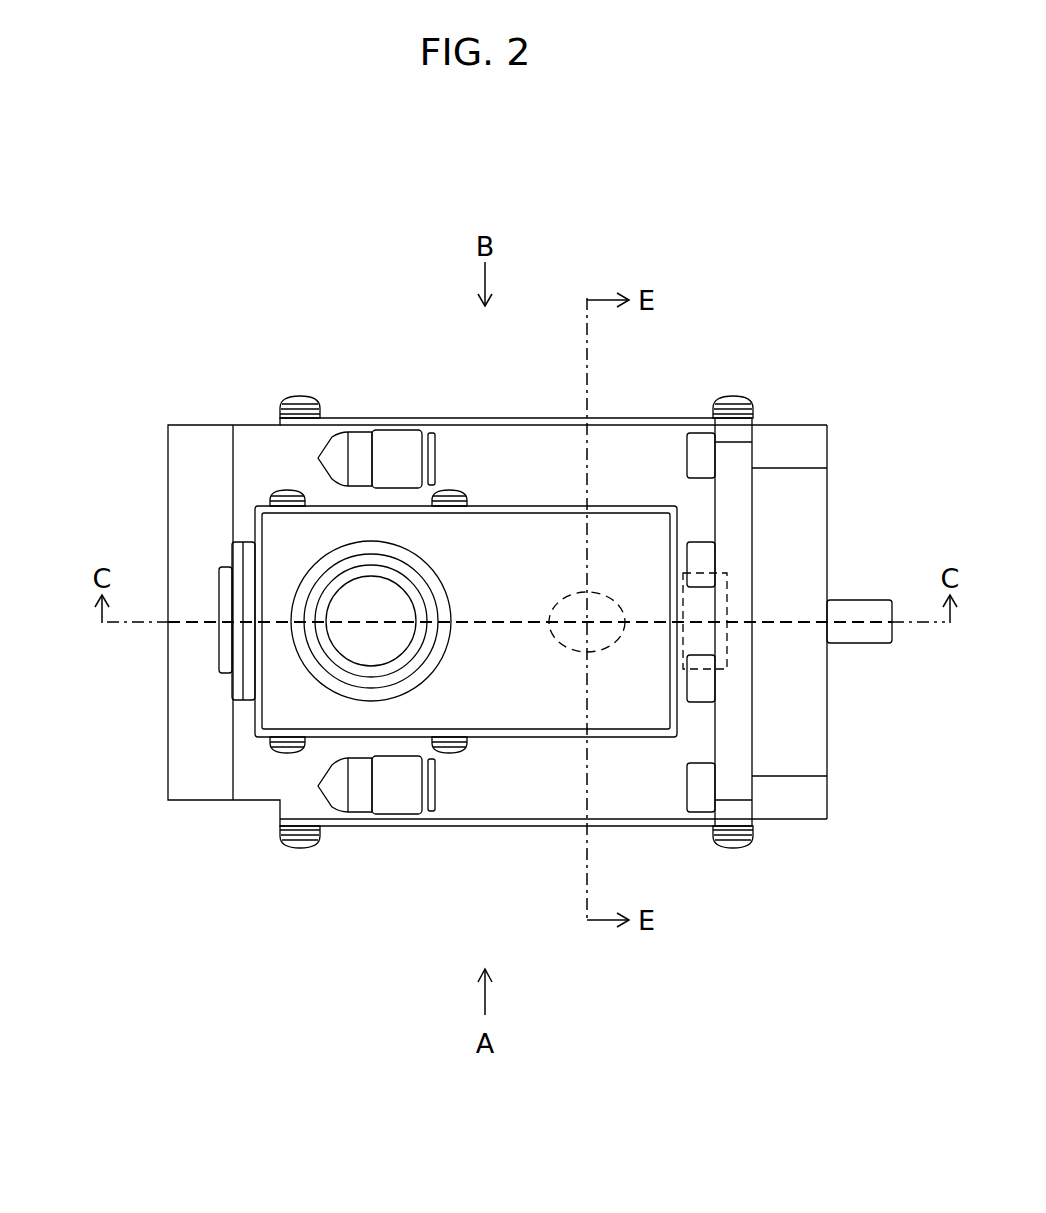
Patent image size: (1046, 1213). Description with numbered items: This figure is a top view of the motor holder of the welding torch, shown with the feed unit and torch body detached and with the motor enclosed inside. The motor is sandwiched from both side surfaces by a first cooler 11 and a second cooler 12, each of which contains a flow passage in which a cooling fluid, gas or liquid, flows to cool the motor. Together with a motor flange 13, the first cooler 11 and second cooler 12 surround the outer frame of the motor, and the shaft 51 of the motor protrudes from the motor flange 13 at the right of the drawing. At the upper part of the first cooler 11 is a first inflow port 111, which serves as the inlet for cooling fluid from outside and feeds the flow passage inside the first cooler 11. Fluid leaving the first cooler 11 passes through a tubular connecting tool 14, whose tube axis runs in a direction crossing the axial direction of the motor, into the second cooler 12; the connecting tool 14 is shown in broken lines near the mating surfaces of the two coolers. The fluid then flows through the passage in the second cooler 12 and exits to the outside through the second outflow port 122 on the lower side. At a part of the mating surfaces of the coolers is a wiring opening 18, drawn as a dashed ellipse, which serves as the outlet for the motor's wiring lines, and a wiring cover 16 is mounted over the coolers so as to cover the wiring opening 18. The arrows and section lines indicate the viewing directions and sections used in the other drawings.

The first cooler 11 is at (167, 435).
The second cooler 12 is at (167, 790).
The motor flange 13 is at (822, 742).
The connecting tool 14 is at (728, 597).
The wiring cover 16 is at (622, 510).
The wiring opening 18 is at (610, 645).
The shaft 51 is at (868, 602).
The first inflow port 111 is at (437, 460).
The second outflow port 122 is at (437, 805).